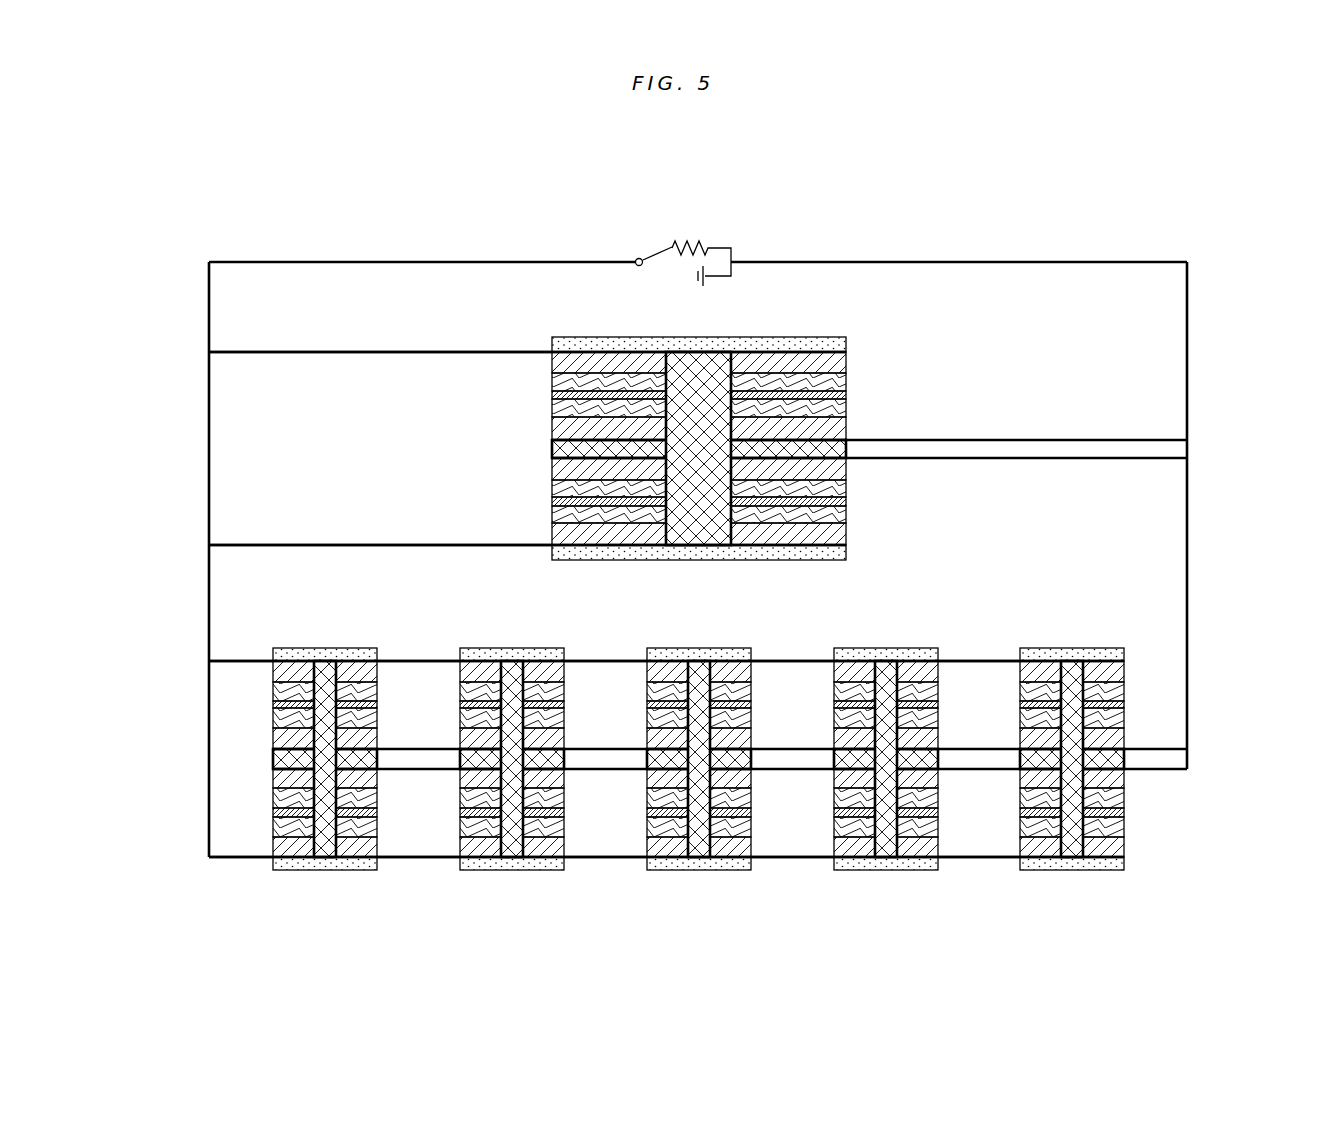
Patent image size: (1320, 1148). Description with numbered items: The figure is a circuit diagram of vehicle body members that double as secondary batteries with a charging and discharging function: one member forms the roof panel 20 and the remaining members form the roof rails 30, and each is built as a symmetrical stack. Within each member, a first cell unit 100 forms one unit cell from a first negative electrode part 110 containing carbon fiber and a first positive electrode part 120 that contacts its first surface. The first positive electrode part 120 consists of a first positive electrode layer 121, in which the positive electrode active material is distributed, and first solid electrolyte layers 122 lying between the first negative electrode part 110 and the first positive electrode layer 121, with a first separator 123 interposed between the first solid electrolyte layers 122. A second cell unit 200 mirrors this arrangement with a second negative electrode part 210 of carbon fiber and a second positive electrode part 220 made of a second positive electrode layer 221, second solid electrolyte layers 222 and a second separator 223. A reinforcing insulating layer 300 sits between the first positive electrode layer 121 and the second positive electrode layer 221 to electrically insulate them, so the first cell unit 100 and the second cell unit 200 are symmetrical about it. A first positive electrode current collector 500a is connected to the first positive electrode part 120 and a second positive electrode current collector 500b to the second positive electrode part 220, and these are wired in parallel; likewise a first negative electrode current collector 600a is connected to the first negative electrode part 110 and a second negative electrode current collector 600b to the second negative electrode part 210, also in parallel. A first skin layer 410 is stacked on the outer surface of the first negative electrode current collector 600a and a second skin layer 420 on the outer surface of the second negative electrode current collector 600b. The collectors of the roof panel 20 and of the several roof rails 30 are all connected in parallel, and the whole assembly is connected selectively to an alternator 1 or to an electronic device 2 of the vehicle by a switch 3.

The alternator 1 is at (705, 287).
The electronic device 2 is at (690, 243).
The switch 3 is at (637, 256).
The roof panel 20 is at (852, 332).
The roof rail 30 is at (313, 644).
The first cell unit 100 is at (577, 527).
The first negative electrode part 110 is at (846, 363).
The first positive electrode part 120 is at (760, 393).
The first positive electrode layer 121 is at (846, 426).
The first solid electrolyte layer 122 is at (846, 379).
The first separator 123 is at (846, 395).
The second cell unit 200 is at (580, 649).
The second negative electrode part 210 is at (846, 540).
The second positive electrode part 220 is at (761, 505).
The second positive electrode layer 221 is at (846, 478).
The second solid electrolyte layer 222 is at (846, 488).
The second separator 223 is at (846, 505).
The reinforcing insulating layer 300 is at (552, 447).
The first skin layer 410 is at (804, 340).
The second skin layer 420 is at (804, 548).
The first positive electrode current collector 500a is at (1073, 438).
The second positive electrode current collector 500b is at (1073, 460).
The first negative electrode current collector 600a is at (312, 353).
The second negative electrode current collector 600b is at (312, 545).